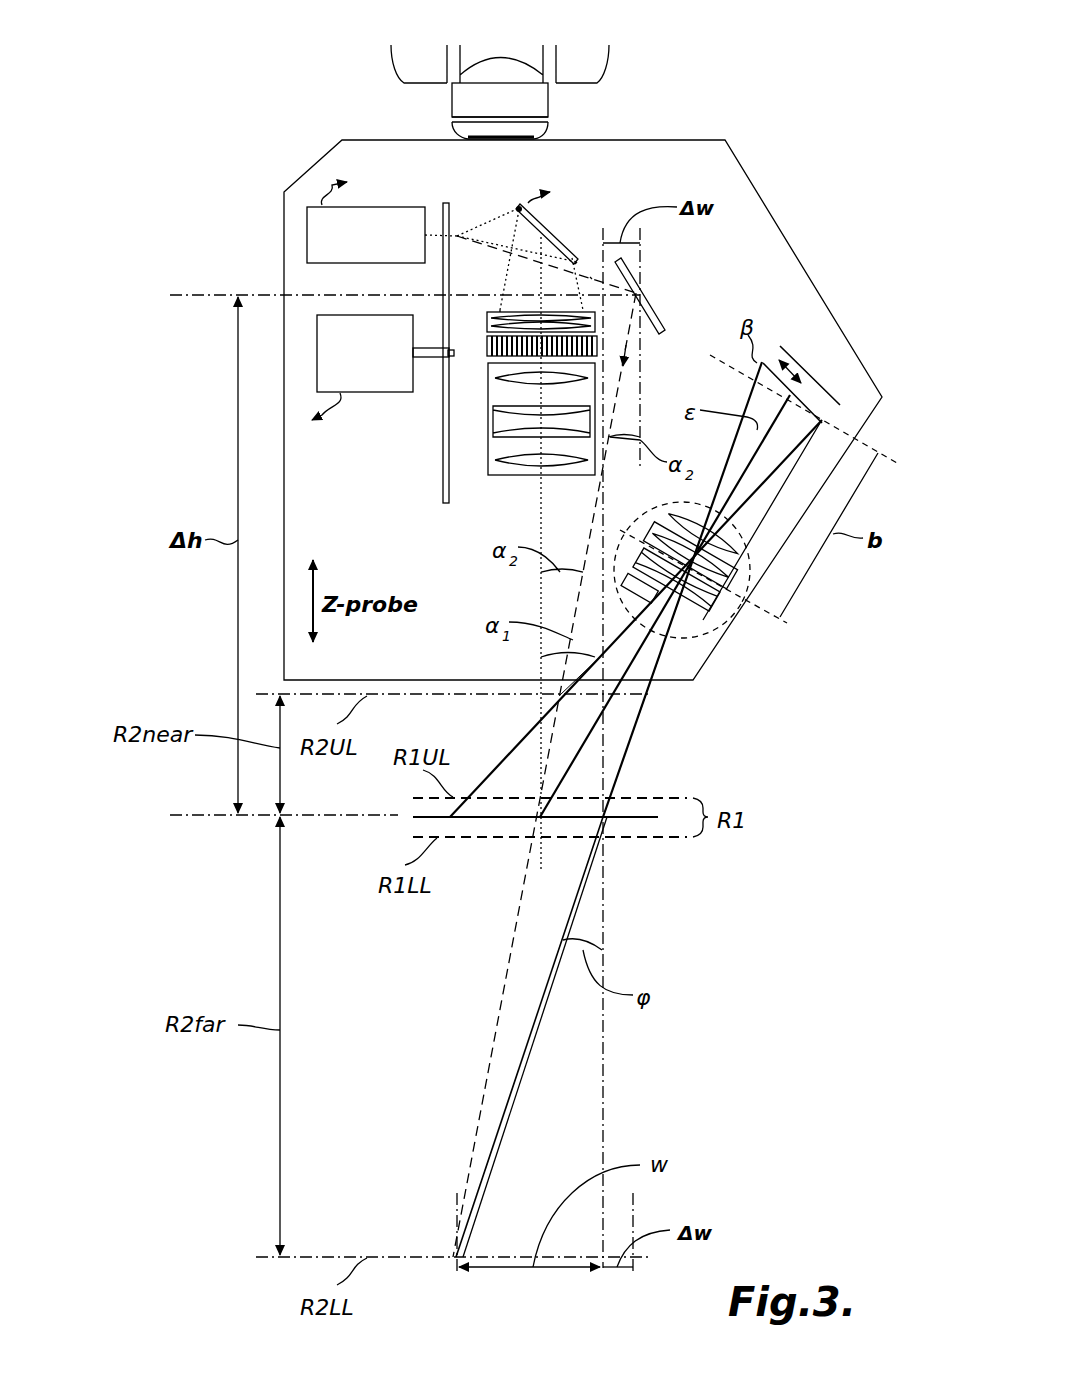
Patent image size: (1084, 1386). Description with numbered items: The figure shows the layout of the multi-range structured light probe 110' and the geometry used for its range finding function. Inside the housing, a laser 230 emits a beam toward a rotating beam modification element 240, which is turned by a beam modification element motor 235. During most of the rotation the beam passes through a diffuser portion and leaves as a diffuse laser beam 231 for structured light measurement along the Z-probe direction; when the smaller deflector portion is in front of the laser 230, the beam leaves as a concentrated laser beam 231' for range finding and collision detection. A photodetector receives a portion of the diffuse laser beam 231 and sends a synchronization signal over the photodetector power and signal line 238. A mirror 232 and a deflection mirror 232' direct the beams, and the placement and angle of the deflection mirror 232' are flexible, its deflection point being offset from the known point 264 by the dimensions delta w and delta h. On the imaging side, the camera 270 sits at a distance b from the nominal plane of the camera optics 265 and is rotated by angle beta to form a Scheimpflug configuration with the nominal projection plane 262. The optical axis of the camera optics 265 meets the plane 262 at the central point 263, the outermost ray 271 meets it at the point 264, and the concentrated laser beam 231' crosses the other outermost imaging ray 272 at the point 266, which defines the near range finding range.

The multi-range structured light probe 110' is at (588, 345).
The laser 230 is at (307, 210).
The rotating beam modification element 240 is at (443, 282).
The beam modification element motor 235 is at (317, 350).
The diffuse laser beam 231 is at (470, 237).
The photodetector power and signal line 238 is at (517, 207).
The mirror 232 is at (597, 209).
The concentrated laser beam 231' is at (650, 221).
The deflection mirror 232' is at (676, 296).
The camera 270 is at (807, 402).
The camera optics 265 is at (705, 620).
The point 266 is at (560, 695).
The outermost imaging ray 272 is at (523, 737).
The central point 263 is at (543, 817).
The point 264 is at (640, 798).
The nominal projection plane 262 is at (637, 820).
The outermost ray 271 is at (517, 1093).